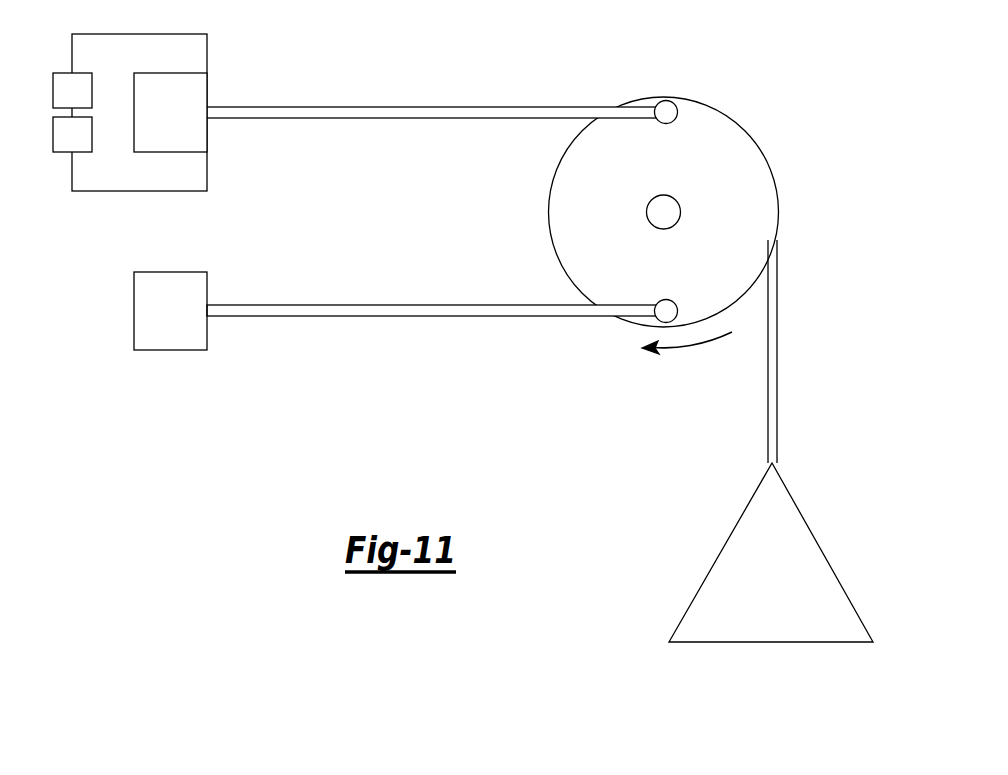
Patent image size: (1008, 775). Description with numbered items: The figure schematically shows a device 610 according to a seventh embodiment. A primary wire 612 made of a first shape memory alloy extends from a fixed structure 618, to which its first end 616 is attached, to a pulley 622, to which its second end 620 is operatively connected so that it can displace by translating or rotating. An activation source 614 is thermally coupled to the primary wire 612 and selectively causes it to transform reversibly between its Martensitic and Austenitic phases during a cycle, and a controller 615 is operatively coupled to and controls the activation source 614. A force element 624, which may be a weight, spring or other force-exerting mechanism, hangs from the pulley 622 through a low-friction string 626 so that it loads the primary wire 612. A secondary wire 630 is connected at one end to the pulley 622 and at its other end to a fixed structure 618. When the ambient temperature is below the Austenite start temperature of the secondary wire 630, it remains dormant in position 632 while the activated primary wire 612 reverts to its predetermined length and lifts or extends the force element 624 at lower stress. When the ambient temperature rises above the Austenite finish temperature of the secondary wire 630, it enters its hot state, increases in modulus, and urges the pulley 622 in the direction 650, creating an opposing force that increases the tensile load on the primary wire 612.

The device 610 is at (742, 62).
The primary wire 612 is at (408, 107).
The activation source 614 is at (86, 101).
The controller 615 is at (86, 145).
The first end 616 is at (207, 102).
The fixed structure 618 is at (184, 122).
The second end 620 is at (654, 103).
The pulley 622 is at (762, 146).
The force element 624 is at (786, 590).
The low-friction string 626 is at (778, 372).
The secondary wire 630 is at (527, 318).
The position 632 is at (297, 317).
The direction 650 is at (687, 354).